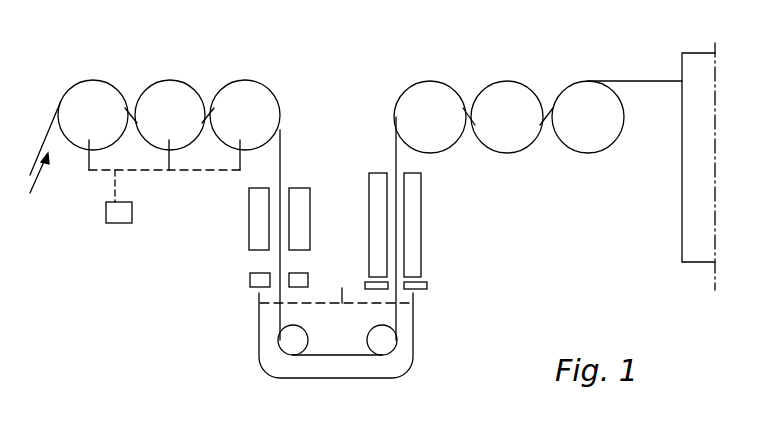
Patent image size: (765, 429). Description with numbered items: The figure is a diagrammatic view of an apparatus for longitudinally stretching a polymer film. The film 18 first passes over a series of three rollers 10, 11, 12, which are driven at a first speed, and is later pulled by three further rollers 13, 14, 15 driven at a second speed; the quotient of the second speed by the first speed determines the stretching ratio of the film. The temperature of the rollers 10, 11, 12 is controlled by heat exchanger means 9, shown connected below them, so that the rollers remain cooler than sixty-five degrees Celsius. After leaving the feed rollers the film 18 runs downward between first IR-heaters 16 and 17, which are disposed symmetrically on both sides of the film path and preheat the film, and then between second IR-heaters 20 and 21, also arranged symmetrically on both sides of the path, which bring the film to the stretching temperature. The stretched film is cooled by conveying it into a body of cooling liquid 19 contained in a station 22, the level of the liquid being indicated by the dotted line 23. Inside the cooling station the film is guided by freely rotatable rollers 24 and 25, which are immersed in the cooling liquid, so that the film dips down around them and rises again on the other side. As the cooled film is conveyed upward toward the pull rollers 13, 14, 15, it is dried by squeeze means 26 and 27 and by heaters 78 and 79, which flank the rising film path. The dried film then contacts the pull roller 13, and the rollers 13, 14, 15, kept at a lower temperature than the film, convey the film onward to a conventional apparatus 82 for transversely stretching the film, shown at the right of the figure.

The heat exchanger means 9 is at (164, 198).
The roller 10 is at (102, 93).
The roller 11 is at (170, 93).
The roller 12 is at (257, 95).
The roller 13 is at (422, 95).
The roller 14 is at (505, 98).
The roller 15 is at (580, 97).
The first IR-heater 16 is at (255, 200).
The first IR-heater 17 is at (295, 230).
The film 18 is at (282, 148).
The body of cooling liquid 19 is at (267, 332).
The second IR-heater 20 is at (260, 280).
The second IR-heater 21 is at (295, 285).
The station 22 is at (262, 377).
The dotted line 23 is at (336, 285).
The freely rotatable roller 24 is at (298, 345).
The freely rotatable roller 25 is at (392, 343).
The squeeze means 26 is at (385, 288).
The squeeze means 27 is at (425, 287).
The heater 78 is at (380, 203).
The heater 79 is at (415, 242).
The conventional apparatus for transversely stretching the film 82 is at (695, 55).